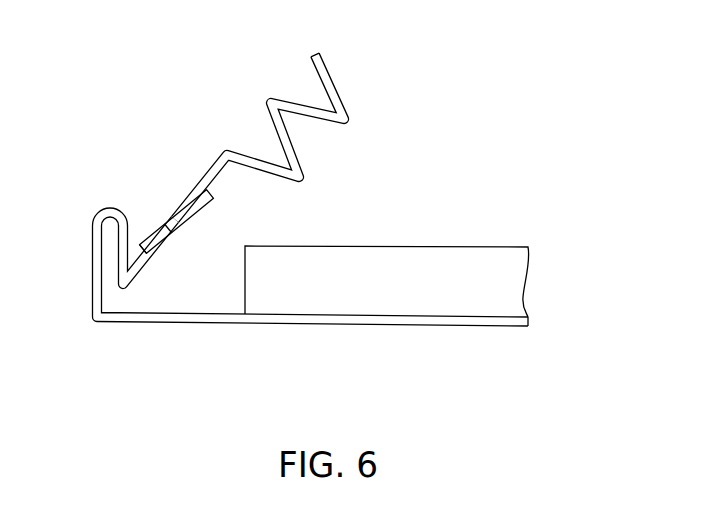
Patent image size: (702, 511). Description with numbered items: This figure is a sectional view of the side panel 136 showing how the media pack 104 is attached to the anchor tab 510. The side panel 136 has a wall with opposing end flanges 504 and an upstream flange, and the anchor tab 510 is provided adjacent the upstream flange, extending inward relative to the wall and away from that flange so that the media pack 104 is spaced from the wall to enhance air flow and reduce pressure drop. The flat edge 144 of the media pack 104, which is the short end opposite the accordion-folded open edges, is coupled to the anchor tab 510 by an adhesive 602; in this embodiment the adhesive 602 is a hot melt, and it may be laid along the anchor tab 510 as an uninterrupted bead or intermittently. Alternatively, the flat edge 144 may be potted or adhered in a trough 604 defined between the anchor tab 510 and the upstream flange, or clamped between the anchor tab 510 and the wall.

The media pack 104 is at (262, 100).
The flat edge 144 is at (200, 176).
The side panel 136 is at (358, 326).
The anchor tab 510 is at (203, 213).
The adhesive 602 is at (168, 228).
The trough 604 is at (139, 258).
The end flange 504 is at (497, 263).